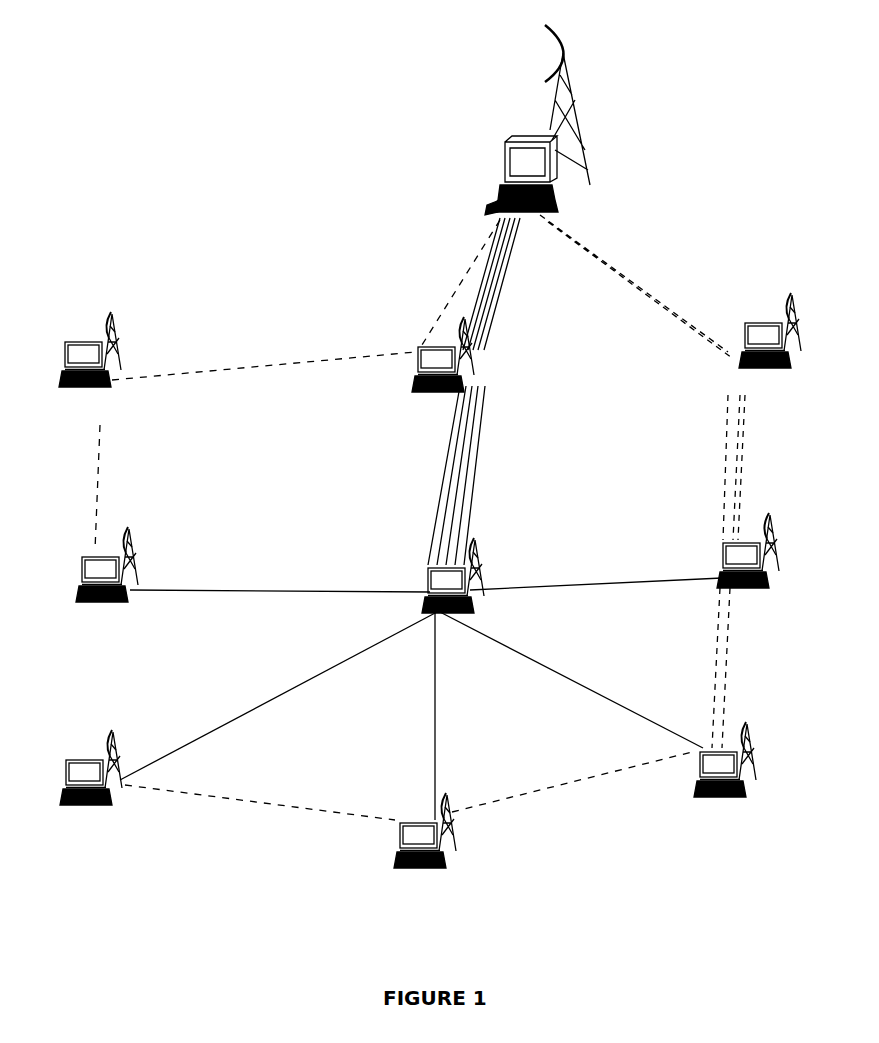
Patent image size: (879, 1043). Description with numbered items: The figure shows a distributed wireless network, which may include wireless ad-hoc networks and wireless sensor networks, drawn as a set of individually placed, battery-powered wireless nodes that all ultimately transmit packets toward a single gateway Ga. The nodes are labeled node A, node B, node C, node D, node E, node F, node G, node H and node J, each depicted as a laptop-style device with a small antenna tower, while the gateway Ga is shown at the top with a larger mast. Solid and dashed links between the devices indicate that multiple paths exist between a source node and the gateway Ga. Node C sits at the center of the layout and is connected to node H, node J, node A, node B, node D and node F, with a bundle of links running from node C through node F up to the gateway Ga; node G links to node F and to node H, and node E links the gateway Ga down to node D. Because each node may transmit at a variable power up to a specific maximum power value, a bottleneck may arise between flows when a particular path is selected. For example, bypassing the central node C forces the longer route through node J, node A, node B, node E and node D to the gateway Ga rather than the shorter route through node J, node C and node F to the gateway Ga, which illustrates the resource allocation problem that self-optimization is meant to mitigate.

The gateway Ga is at (594, 124).
The wireless node A is at (399, 848).
The wireless node B is at (702, 781).
The central node C is at (425, 604).
The wireless node D is at (729, 567).
The wireless node E is at (763, 343).
The wireless node F is at (442, 367).
The network node G is at (103, 367).
The network node H is at (103, 584).
The wireless node J is at (82, 781).